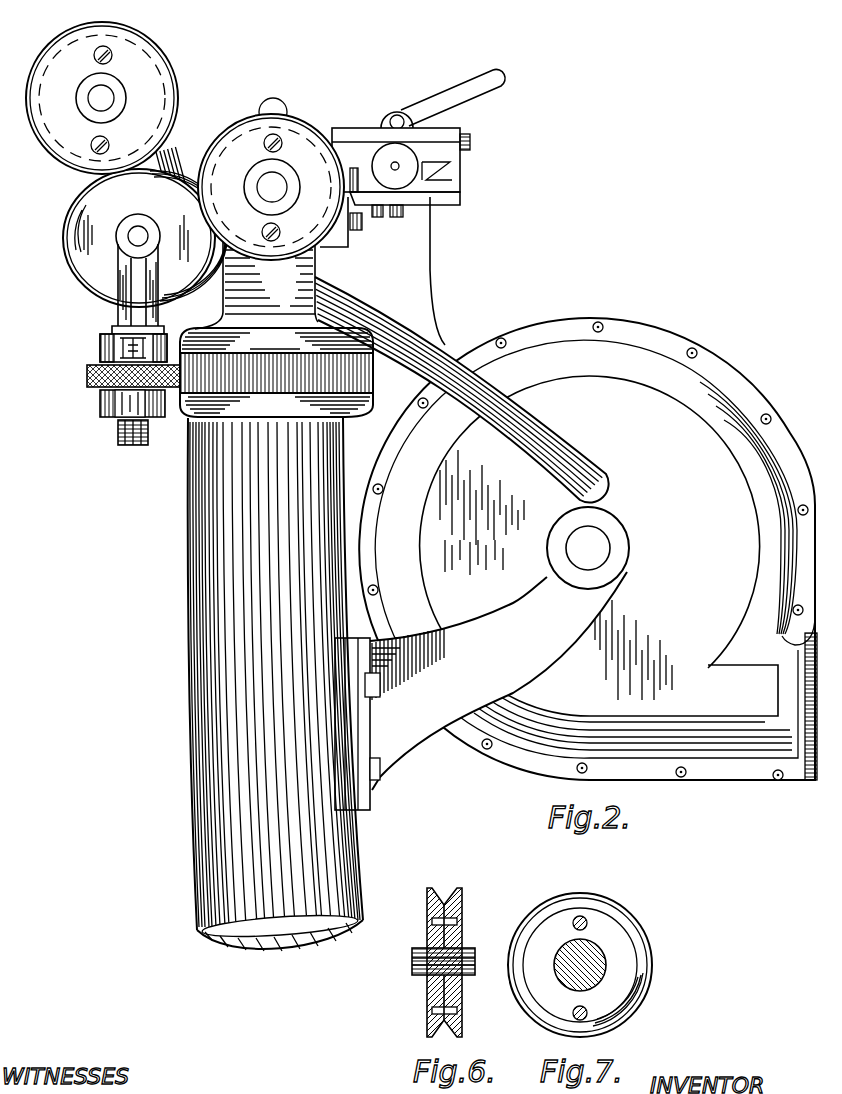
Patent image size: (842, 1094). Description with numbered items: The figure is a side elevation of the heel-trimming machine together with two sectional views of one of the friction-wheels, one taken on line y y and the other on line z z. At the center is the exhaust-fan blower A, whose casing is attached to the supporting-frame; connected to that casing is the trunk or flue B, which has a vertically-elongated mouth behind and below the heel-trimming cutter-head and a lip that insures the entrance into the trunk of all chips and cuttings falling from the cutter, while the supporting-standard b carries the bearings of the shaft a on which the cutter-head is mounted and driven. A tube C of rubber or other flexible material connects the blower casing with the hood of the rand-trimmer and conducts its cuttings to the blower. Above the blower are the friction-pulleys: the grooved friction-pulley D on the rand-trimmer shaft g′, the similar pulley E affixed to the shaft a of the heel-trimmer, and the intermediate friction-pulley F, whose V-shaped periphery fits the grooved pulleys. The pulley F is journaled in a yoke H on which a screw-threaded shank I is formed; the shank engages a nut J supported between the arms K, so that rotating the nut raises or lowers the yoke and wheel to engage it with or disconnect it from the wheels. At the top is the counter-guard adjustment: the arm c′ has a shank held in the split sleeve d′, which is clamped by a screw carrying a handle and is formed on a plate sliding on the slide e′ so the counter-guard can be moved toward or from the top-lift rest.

In FIG. 2, the exhaust-fan blower A is at (588, 549).
In FIG. 2, the trunk or flue B is at (312, 288).
In FIG. 2, the supporting-standard b is at (188, 617).
In FIG. 2, the tube C is at (413, 348).
In FIG. 2, the grooved friction-pulley D is at (143, 65).
In FIG. 2, the friction-pulley E is at (300, 132).
In FIG. 2, the intermediate friction-pulley F is at (72, 268).
In FIG. 2, the shaft g′ is at (112, 97).
In FIG. 2, the shaft a is at (272, 187).
In FIG. 2, the split sleeve or socket d′ is at (368, 130).
In FIG. 2, the arm c′ is at (470, 142).
In FIG. 2, the slide e′ is at (452, 171).
In FIG. 2, the yoke H is at (118, 312).
In FIG. 2, the arms K is at (100, 347).
In FIG. 2, the nut J is at (90, 376).
In FIG. 2, the screw-threaded shank I is at (120, 433).
In FIG. 6, the section line z is at (444, 1052).
In FIG. 7, the section line y is at (580, 1062).